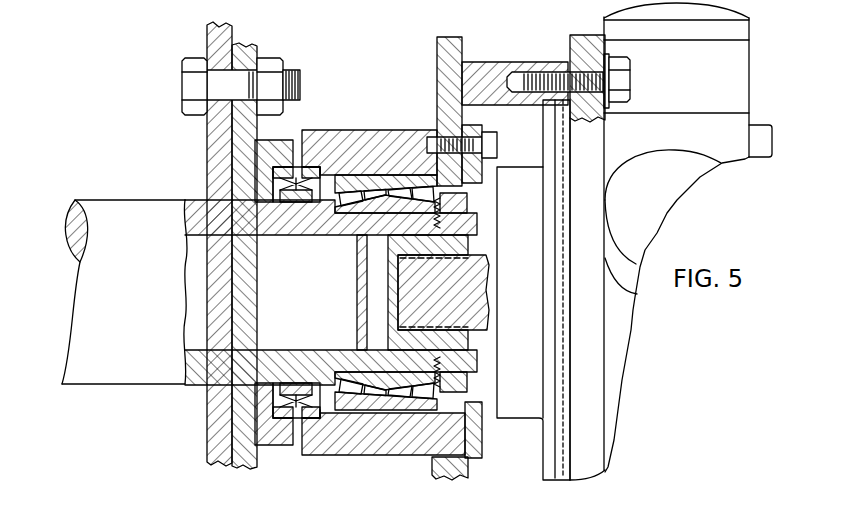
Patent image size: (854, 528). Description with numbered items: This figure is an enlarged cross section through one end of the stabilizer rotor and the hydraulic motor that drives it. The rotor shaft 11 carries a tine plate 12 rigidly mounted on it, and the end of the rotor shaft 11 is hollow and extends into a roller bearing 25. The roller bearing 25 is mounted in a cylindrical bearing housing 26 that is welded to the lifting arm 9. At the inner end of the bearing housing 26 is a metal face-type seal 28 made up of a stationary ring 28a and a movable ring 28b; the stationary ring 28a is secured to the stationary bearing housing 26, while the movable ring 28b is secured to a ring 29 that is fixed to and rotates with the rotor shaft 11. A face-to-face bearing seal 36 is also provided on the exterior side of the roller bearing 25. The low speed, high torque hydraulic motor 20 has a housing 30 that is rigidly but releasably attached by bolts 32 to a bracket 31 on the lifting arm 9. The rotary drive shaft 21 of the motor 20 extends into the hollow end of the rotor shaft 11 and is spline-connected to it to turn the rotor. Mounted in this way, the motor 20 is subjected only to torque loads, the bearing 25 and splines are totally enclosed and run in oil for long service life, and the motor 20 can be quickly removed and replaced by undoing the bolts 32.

The lifting arm 9 is at (437, 50).
The rotor shaft 11 is at (119, 209).
The tine plate 12 is at (207, 33).
The hydraulic motor 20 is at (744, 78).
The drive shaft 21 is at (470, 255).
The roller bearing 25 is at (363, 178).
The bearing housing 26 is at (400, 130).
The face-type seal 28 is at (296, 122).
The stationary ring 28a is at (335, 277).
The movable ring 28b is at (331, 292).
The ring 29 is at (287, 146).
The motor housing 30 is at (606, 140).
The bracket 31 is at (492, 62).
The bolt 32 is at (631, 80).
The face-to-face bearing seal 36 is at (558, 72).